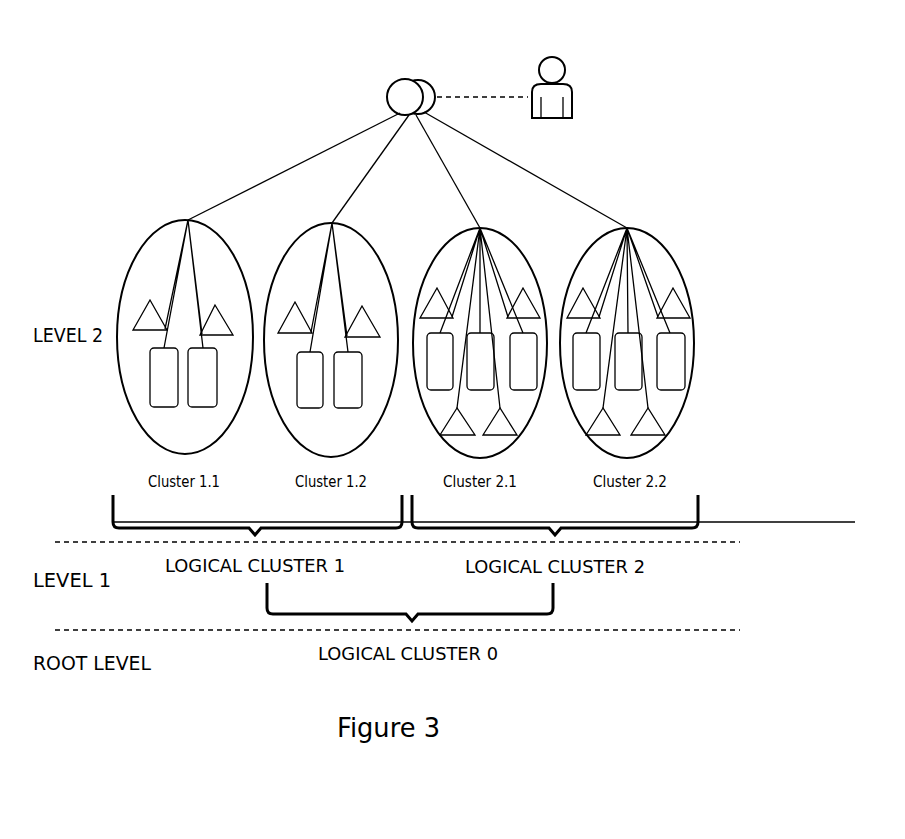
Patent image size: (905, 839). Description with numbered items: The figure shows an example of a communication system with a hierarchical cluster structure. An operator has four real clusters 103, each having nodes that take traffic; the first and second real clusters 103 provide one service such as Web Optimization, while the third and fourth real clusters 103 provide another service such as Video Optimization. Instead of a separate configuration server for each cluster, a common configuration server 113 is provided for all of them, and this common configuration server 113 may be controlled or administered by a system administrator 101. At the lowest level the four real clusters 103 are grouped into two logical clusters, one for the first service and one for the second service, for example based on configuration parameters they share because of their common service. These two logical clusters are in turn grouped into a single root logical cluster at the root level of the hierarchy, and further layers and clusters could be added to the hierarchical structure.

The system administrator 101 is at (556, 57).
The common configuration server 113 is at (404, 78).
The real clusters 103 is at (143, 250).